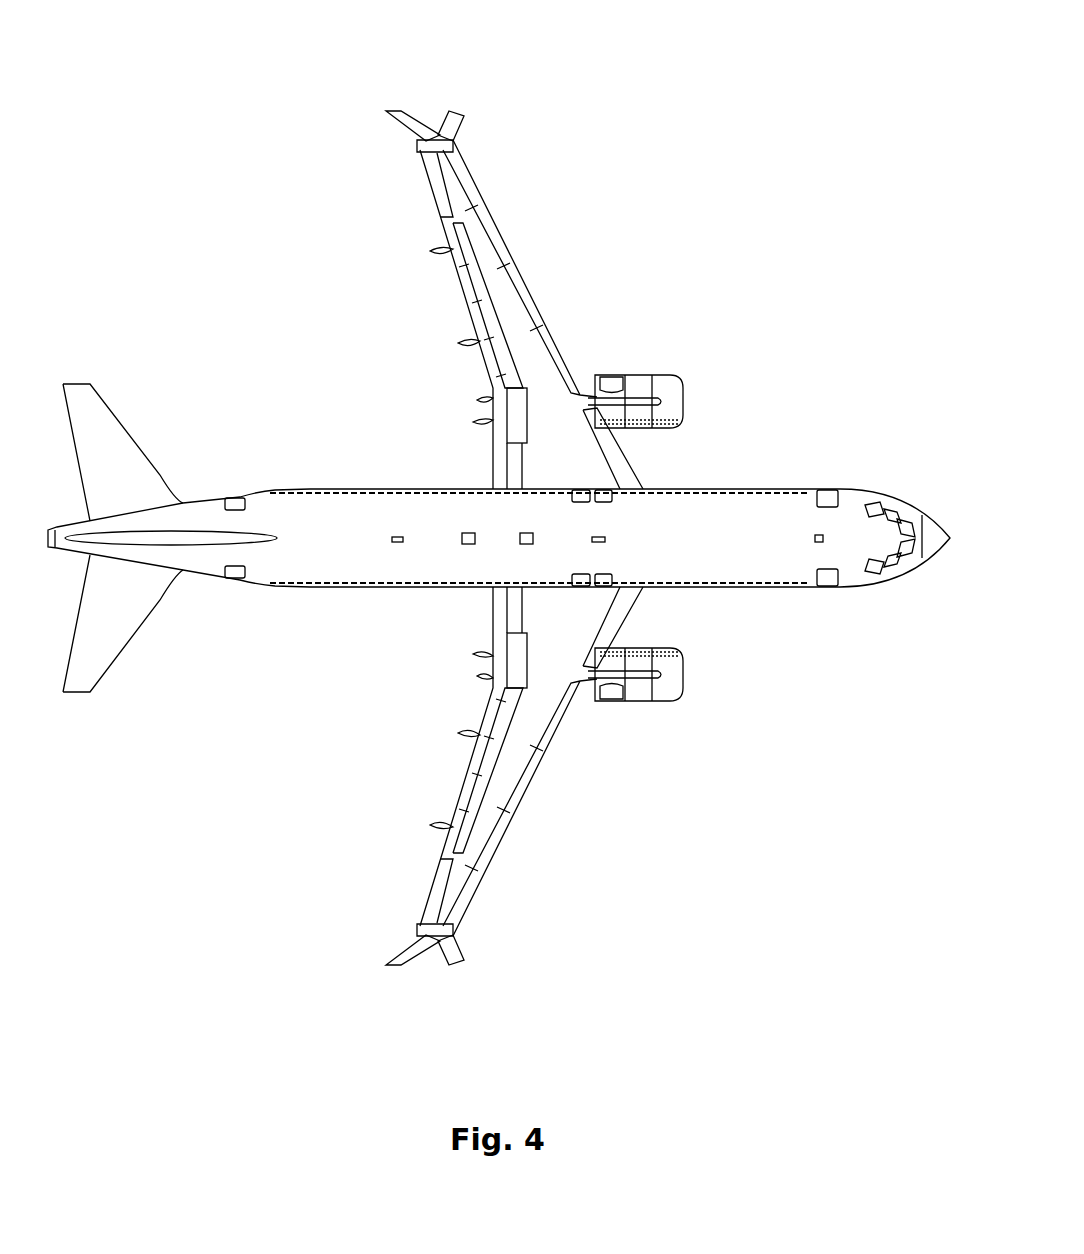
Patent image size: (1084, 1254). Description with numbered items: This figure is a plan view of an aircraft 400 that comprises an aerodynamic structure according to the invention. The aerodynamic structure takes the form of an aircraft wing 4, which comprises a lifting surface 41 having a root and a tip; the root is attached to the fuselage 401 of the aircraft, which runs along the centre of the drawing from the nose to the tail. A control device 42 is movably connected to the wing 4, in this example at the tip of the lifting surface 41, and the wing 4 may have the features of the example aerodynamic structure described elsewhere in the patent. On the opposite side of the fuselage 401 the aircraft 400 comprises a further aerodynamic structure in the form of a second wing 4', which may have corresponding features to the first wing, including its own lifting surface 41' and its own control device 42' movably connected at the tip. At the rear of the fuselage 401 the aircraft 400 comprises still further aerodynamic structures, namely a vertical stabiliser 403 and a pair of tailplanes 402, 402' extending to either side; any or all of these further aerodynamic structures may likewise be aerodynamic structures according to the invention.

The aircraft 400 is at (207, 162).
The aircraft wing 4 is at (544, 251).
The second wing 4' is at (537, 814).
The lifting surface 41 is at (541, 268).
The lifting surface of second wing 41' is at (539, 807).
The control device 42 is at (425, 82).
The control device of second wing 42' is at (425, 983).
The fuselage 401 is at (757, 515).
The tailplane 402 is at (123, 402).
The tailplane 402' is at (123, 657).
The vertical stabiliser 403 is at (190, 540).